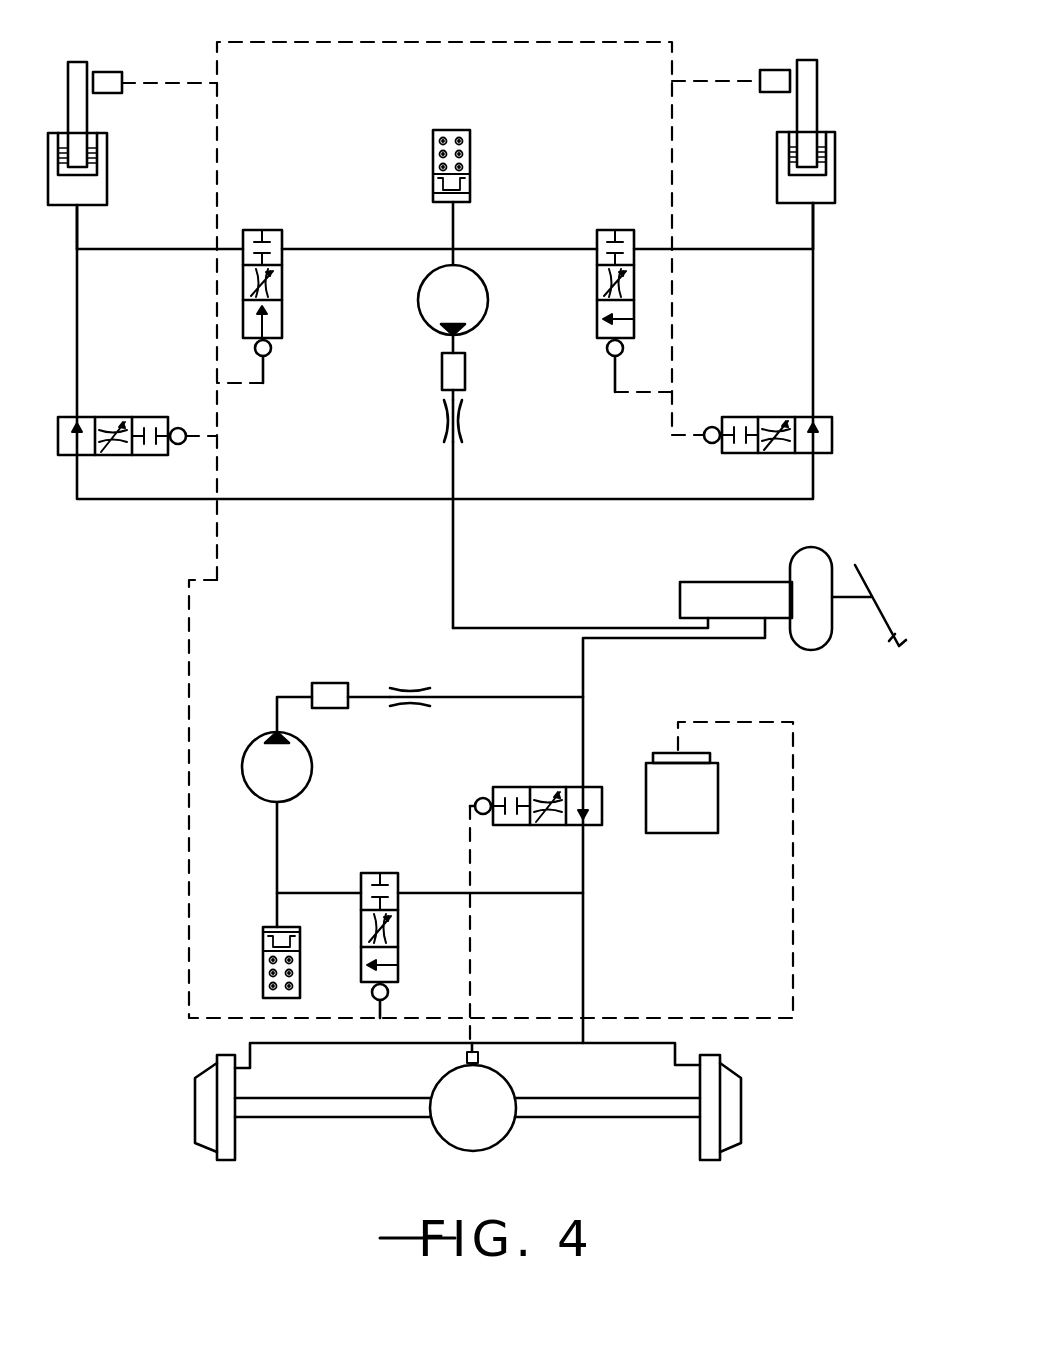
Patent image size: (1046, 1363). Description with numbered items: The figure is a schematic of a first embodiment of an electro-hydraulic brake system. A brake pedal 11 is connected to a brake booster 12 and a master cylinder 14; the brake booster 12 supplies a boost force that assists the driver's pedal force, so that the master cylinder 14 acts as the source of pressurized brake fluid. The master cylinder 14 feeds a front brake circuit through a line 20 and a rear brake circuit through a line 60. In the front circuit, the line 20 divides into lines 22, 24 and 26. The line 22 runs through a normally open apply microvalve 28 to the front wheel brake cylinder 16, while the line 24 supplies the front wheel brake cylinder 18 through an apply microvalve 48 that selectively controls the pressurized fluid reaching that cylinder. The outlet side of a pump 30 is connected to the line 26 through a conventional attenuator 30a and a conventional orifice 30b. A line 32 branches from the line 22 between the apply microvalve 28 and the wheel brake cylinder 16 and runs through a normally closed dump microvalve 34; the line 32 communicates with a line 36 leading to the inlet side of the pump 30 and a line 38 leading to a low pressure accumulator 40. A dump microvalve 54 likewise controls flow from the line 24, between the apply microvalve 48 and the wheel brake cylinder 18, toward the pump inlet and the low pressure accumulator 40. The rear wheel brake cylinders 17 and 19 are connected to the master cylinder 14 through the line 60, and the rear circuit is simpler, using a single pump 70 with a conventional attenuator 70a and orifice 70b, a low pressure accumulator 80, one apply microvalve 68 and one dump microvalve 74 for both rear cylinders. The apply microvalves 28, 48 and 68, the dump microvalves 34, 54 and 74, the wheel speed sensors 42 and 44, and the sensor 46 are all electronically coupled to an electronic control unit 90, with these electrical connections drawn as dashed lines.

The brake pedal 11 is at (875, 598).
The brake booster 12 is at (813, 562).
The master cylinder 14 is at (700, 590).
The front wheel brake cylinder 16 is at (107, 187).
The rear wheel brake cylinder 17 is at (218, 1056).
The front wheel brake cylinder 18 is at (777, 183).
The rear wheel brake cylinder 19 is at (712, 1050).
The line 20 is at (505, 628).
The line 22 is at (302, 498).
The line 24 is at (538, 498).
The line 26 is at (457, 468).
The apply microvalve 28 is at (125, 417).
The pump 30 is at (488, 310).
The attenuator 30a is at (466, 375).
The orifice 30b is at (466, 412).
The line 32 is at (165, 248).
The dump microvalve 34 is at (260, 230).
The line 36 is at (458, 252).
The line 38 is at (455, 227).
The low pressure accumulator 40 is at (470, 170).
The wheel speed sensor 42 is at (103, 72).
The wheel speed sensor 44 is at (775, 70).
The sensor 46 is at (480, 1057).
The apply microvalve 48 is at (733, 417).
The dump microvalve 54 is at (608, 230).
The line 60 is at (630, 648).
The apply microvalve 68 is at (498, 787).
The pump 70 is at (313, 765).
The attenuator 70a is at (327, 683).
The orifice 70b is at (398, 688).
The dump microvalve 74 is at (365, 875).
The low pressure accumulator 80 is at (302, 978).
The electronic control unit 90 is at (718, 817).